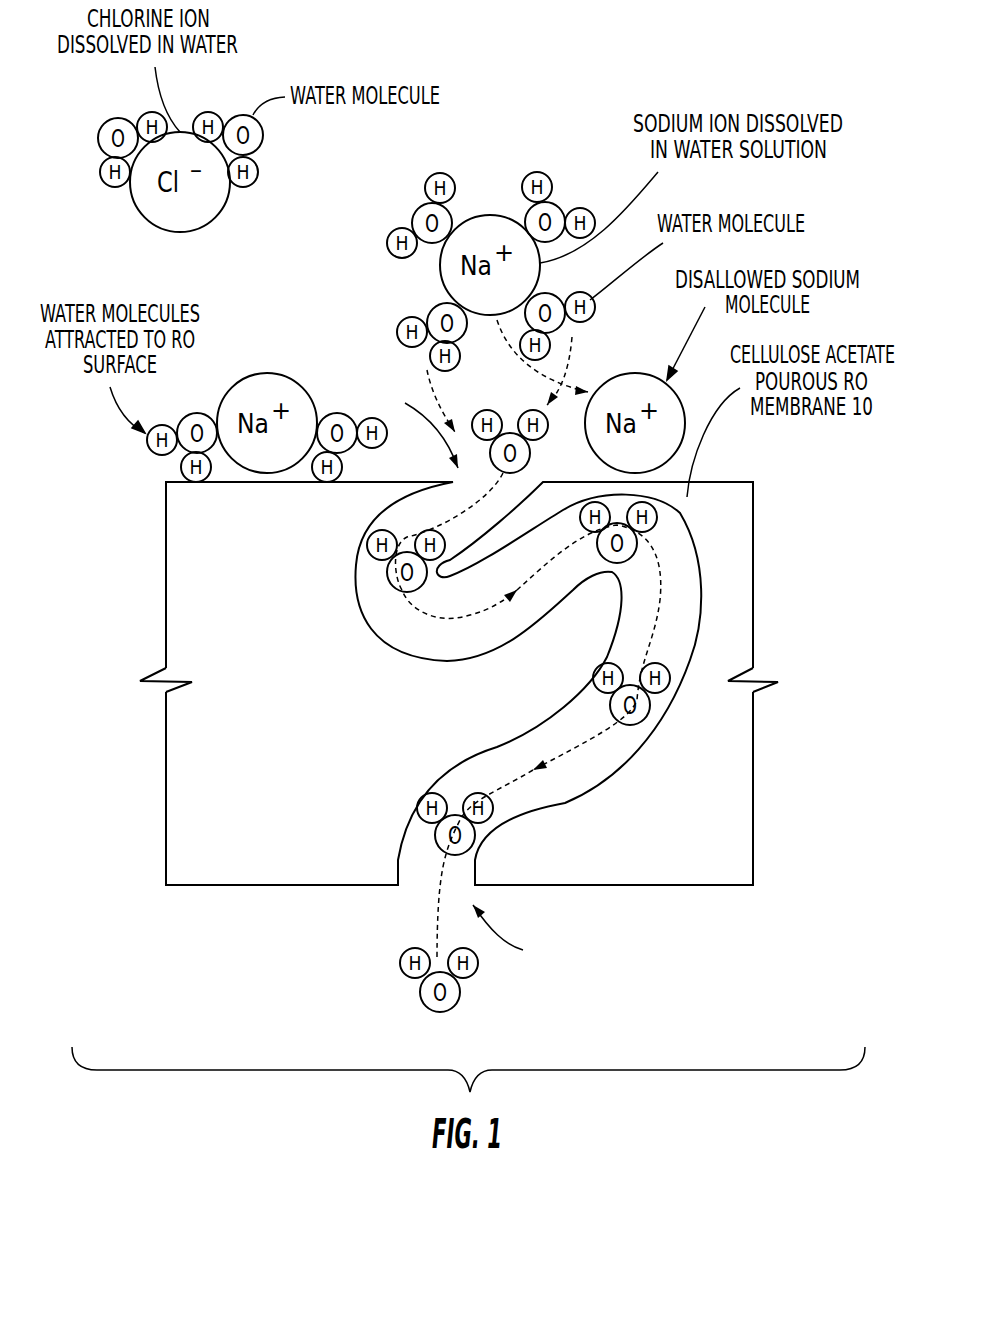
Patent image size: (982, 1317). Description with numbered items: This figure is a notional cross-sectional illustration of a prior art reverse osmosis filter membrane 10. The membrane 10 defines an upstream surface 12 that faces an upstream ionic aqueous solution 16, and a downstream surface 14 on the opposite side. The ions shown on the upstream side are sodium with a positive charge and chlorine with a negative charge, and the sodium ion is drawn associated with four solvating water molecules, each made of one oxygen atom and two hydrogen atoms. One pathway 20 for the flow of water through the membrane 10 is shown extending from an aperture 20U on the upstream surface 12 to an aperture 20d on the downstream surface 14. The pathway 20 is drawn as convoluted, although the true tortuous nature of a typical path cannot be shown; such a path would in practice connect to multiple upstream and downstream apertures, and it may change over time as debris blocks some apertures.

The RO membrane 10 is at (263, 870).
The upstream surface 12 is at (730, 482).
The downstream surface 14 is at (353, 885).
The upstream ionic aqueous solution 16 is at (499, 165).
The pathway 20 is at (638, 745).
The aperture 20U is at (413, 424).
The aperture 20d is at (517, 936).